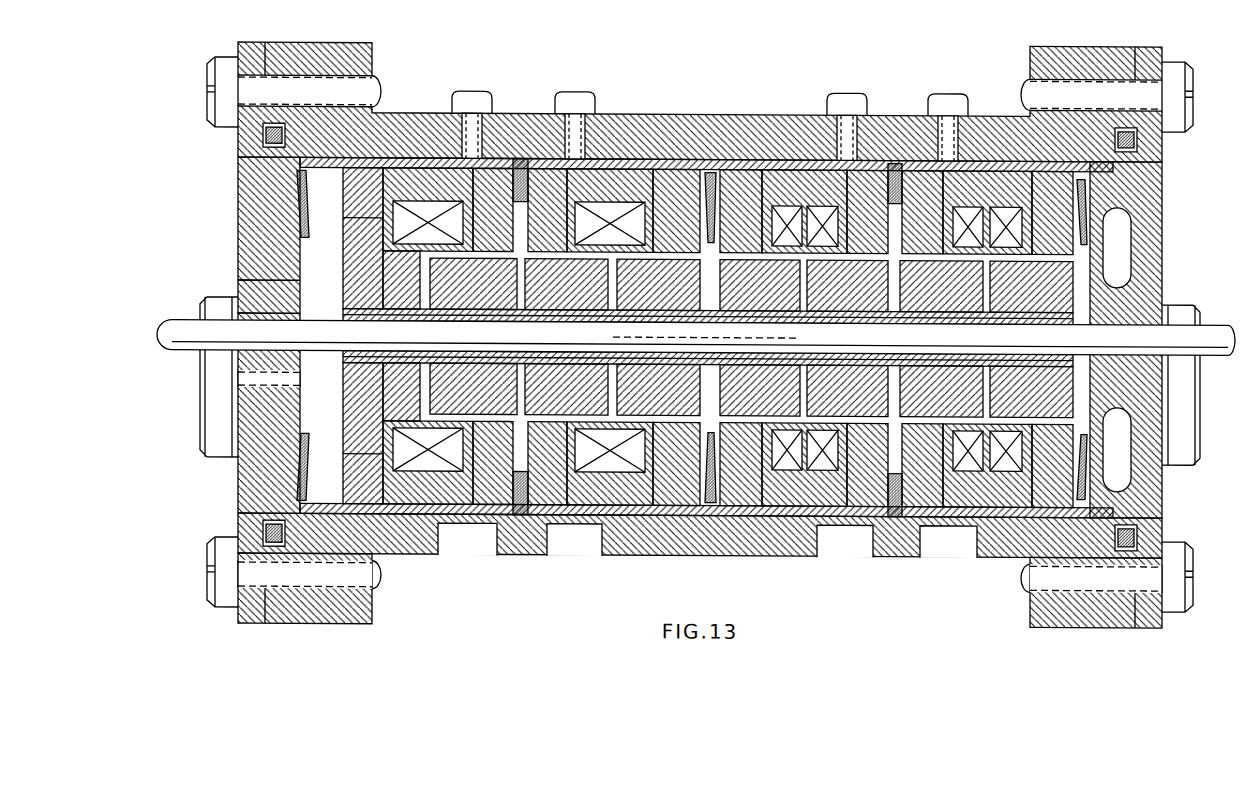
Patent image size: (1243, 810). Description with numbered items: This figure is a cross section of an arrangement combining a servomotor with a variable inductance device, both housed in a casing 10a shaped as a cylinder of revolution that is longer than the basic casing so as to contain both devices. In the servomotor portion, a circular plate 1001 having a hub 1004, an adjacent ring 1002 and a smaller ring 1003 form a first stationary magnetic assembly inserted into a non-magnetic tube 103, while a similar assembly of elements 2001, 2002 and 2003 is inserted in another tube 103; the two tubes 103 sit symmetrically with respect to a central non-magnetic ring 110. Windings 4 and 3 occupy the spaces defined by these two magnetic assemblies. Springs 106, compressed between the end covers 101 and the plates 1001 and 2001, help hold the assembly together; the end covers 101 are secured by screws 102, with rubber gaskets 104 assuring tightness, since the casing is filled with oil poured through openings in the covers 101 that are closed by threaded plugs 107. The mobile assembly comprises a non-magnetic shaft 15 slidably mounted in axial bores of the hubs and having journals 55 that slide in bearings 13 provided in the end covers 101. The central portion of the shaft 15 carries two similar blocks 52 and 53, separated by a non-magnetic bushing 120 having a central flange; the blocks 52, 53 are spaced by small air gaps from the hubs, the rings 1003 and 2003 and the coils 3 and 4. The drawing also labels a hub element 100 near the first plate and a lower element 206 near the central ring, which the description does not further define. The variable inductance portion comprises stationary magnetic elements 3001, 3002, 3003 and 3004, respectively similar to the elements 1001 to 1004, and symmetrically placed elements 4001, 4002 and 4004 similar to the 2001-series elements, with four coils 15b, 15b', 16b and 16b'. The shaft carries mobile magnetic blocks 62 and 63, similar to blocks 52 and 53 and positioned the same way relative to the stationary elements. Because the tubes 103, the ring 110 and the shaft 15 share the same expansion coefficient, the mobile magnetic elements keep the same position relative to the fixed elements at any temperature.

The winding 3 is at (383, 222).
The winding 4 is at (613, 208).
The casing 10a is at (388, 112).
The bearing 13 is at (237, 320).
The shaft 15 is at (530, 342).
The coil 15b is at (829, 272).
The coil 15b' is at (778, 173).
The coil 16b is at (987, 282).
The coil 16b' is at (987, 300).
The block 52 is at (470, 310).
The block 53 is at (582, 310).
The journal 55 is at (186, 351).
The mobile magnetic block 62 is at (853, 310).
The mobile magnetic block 63 is at (948, 310).
The rotor hub 100 is at (343, 232).
The end cover 101 is at (240, 208).
The screw 102 is at (207, 82).
The tube 103 is at (498, 160).
The rubber gasket 104 is at (262, 522).
The spring 106 is at (303, 440).
The threaded plug 107 is at (212, 445).
The non magnetic ring 110 is at (522, 178).
The non magnetic bushing 120 is at (522, 375).
The lower spring 206 is at (712, 440).
The circular plate 1001 is at (300, 187).
The ring 1002 is at (428, 185).
The ring 1003 is at (520, 170).
The hub 1004 is at (297, 290).
The plate 2001 is at (740, 178).
The ring 2002 is at (660, 185).
The ring 2003 is at (577, 180).
The stationary magnetic element 3001 is at (775, 170).
The stationary magnetic element 3002 is at (870, 182).
The stationary magnetic element 3003 is at (890, 170).
The stationary magnetic element 3004 is at (780, 440).
The stationary magnetic element 4001 is at (1112, 190).
The stationary magnetic element 4002 is at (987, 175).
The stationary magnetic element 4004 is at (1130, 290).